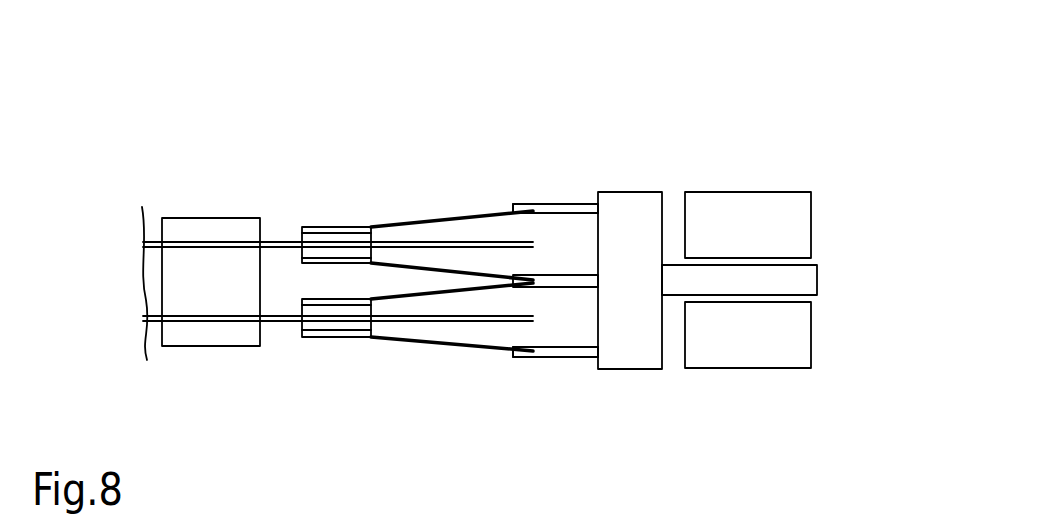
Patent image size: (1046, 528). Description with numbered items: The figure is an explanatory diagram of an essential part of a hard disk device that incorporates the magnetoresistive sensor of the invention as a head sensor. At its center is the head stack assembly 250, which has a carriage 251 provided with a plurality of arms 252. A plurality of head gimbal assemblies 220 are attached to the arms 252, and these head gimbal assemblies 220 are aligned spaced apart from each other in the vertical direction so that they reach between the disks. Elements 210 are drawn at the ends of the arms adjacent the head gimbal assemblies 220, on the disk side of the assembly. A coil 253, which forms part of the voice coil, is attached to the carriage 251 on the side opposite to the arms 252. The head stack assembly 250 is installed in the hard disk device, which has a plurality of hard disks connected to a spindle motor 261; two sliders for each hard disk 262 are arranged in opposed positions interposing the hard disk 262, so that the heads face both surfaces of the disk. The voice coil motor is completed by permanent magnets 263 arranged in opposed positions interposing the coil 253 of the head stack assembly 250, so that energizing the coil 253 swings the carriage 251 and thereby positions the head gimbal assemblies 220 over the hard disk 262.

The sleeve 210 is at (298, 234).
The head gimbal assembly 220 is at (435, 221).
The head stack assembly 250 is at (635, 162).
The carriage 251 is at (633, 358).
The arm 252 is at (530, 204).
The coil 253 is at (805, 282).
The spindle motor 261 is at (188, 224).
The hard disk 262 is at (272, 240).
The permanent magnet 263 is at (742, 192).